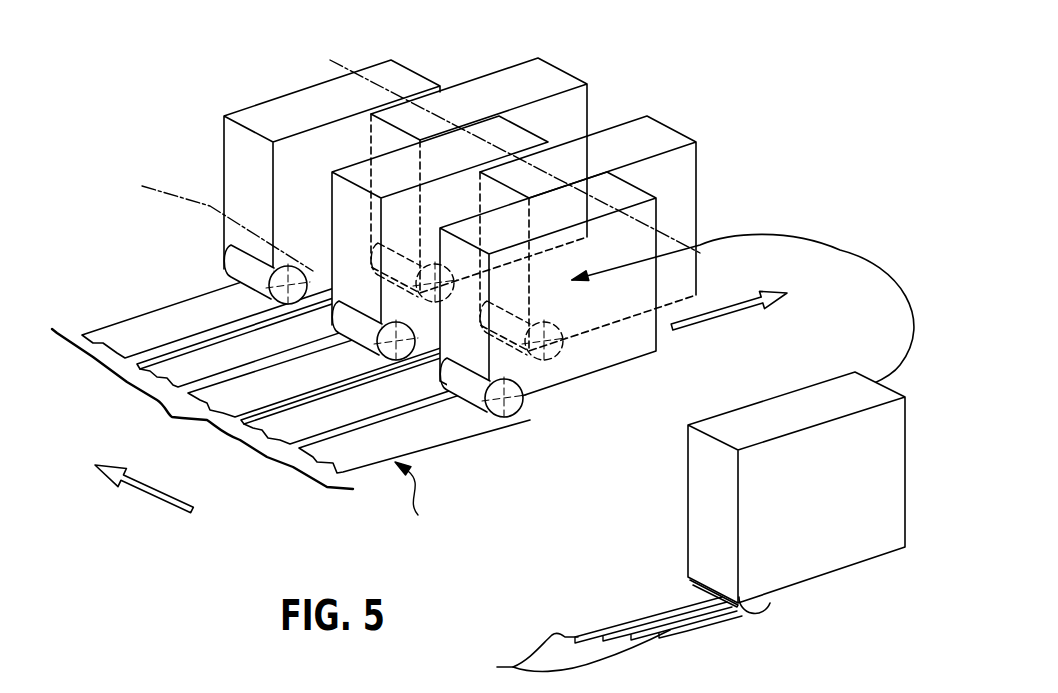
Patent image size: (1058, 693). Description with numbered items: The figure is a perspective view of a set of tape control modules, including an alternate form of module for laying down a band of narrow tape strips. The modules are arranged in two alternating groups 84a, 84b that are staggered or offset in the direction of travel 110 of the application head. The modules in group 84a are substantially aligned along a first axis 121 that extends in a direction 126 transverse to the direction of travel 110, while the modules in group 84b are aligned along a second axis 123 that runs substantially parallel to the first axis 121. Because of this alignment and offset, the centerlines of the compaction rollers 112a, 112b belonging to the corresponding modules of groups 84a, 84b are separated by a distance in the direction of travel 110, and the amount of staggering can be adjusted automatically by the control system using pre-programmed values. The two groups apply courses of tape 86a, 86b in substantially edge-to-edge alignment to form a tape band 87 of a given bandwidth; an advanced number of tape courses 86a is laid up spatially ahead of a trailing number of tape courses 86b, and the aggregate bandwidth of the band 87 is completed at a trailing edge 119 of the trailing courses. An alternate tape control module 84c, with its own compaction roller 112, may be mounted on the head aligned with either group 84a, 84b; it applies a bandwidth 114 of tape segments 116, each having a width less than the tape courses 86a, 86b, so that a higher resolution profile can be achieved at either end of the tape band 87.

The tape control module group 84a is at (238, 144).
The tape control module group 84b is at (678, 173).
The tape control module 84c is at (852, 537).
The tape courses 86a is at (138, 333).
The tape courses 86b is at (160, 362).
The tape band 87 is at (202, 409).
The direction of travel 110 is at (727, 325).
The compaction roller 112 is at (767, 612).
The compaction roller 112a is at (228, 277).
The compaction roller 112b is at (363, 345).
The bandwidth of tape segments 114 is at (599, 599).
The tape segments 116 is at (562, 656).
The trailing edge 119 is at (422, 506).
The first axis 121 is at (204, 219).
The second axis 123 is at (672, 240).
The transverse direction 126 is at (148, 498).